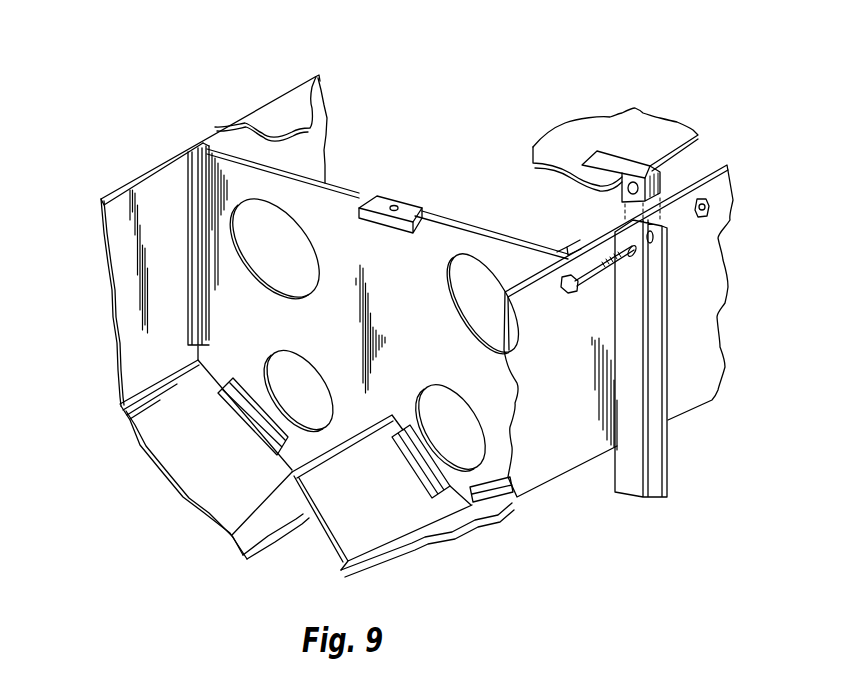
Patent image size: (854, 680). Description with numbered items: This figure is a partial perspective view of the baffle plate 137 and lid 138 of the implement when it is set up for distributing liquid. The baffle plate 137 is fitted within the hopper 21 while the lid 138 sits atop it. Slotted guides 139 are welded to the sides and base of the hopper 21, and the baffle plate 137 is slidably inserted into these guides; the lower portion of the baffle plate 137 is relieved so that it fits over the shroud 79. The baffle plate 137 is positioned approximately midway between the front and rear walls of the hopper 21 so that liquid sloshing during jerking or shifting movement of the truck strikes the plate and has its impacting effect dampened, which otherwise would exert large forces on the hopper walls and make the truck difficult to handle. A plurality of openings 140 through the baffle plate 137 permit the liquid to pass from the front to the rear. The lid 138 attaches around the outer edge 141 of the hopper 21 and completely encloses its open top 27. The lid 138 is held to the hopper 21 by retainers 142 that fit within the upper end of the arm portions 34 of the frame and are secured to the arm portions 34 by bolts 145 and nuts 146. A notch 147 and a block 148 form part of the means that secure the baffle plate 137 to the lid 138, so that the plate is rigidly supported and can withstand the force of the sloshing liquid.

The hopper 21 is at (112, 318).
The open top 27 is at (509, 200).
The arm portions 34 is at (670, 315).
The shroud 79 is at (388, 515).
The baffle plate 137 is at (230, 178).
The lid 138 is at (272, 108).
The slotted guides 139 is at (193, 213).
The openings 140 is at (293, 245).
The outer edge 141 is at (152, 173).
The retainers 142 is at (627, 165).
The bolts 145 is at (567, 292).
The nuts 146 is at (710, 208).
The notch 147 is at (366, 198).
The block 148 is at (412, 213).